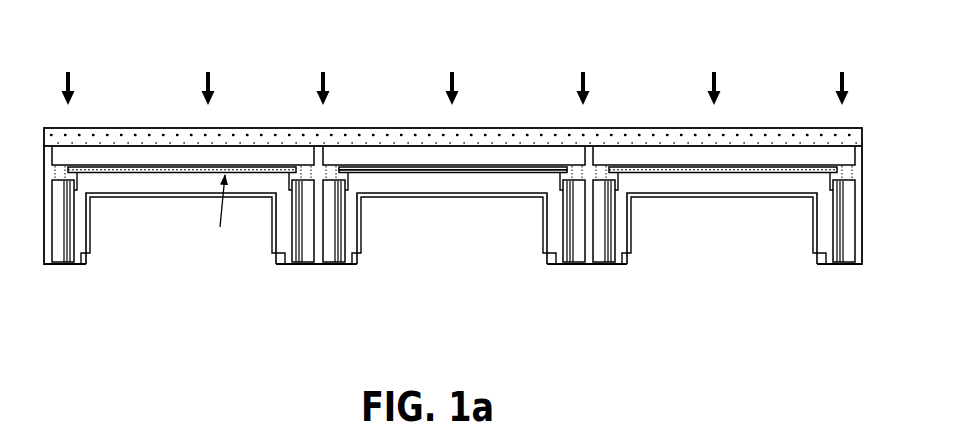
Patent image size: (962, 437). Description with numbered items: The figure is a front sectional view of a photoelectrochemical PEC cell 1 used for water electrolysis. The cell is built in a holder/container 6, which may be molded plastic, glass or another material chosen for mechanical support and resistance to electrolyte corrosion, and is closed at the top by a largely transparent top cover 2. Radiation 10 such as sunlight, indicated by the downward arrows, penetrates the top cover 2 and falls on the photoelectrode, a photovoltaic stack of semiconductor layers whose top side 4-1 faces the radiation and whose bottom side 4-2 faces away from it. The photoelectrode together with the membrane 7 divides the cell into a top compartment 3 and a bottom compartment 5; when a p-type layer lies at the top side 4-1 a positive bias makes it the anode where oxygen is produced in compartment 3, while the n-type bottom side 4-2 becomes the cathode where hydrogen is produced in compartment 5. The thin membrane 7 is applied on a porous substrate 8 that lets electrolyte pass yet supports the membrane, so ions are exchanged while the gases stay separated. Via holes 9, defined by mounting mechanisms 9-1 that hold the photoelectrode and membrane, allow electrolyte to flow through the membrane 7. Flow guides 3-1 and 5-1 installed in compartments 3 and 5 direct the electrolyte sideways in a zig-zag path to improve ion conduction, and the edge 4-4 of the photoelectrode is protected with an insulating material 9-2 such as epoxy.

The PEC cell 1 is at (180, 48).
The top cover 2 is at (124, 138).
The compartment 3 is at (177, 156).
The flow guide 3-1 is at (783, 158).
The top side 4-1 is at (500, 164).
The bottom side 4-2 is at (484, 176).
The edge 4-4 is at (836, 177).
The compartment 5 is at (173, 188).
The flow guide 5-1 is at (742, 184).
The holder/container 6 is at (355, 266).
The membrane 7 is at (61, 258).
The porous substrate 8 is at (77, 244).
The via hole 9 is at (336, 178).
The mounting mechanism 9-1 is at (615, 184).
The insulating material 9-2 is at (583, 248).
The radiation 10 is at (707, 83).